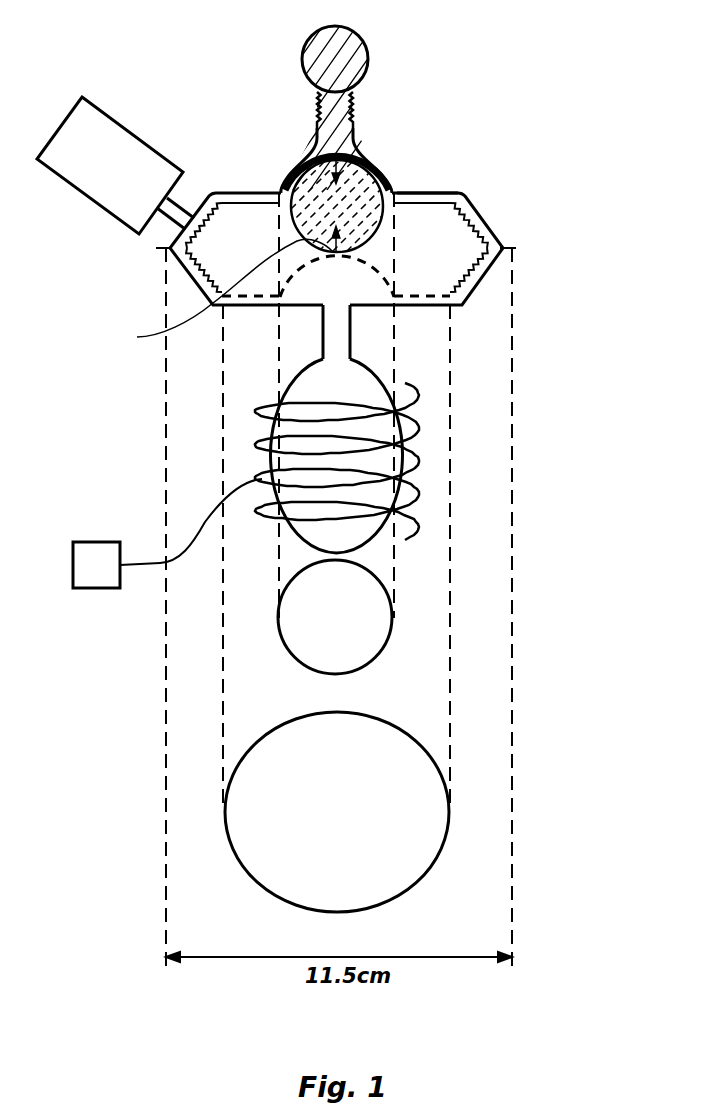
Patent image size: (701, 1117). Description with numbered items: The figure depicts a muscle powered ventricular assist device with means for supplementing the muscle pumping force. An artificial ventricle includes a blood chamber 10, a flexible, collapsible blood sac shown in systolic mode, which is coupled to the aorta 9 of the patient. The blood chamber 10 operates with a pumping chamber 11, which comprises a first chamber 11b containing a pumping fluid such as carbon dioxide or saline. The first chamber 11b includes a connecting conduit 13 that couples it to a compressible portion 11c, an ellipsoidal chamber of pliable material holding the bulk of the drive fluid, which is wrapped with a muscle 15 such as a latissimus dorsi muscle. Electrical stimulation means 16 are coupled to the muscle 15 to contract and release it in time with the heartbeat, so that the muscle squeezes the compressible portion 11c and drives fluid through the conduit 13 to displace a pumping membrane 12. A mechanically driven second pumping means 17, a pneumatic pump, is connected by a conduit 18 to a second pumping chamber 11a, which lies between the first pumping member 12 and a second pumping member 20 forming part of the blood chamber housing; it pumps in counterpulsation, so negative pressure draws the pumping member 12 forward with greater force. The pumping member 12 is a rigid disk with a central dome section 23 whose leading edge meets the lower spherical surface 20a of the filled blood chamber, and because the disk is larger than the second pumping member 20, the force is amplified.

The aorta 9 is at (368, 53).
The blood chamber 10 is at (383, 163).
The pumping chamber 11 is at (500, 227).
The second pumping chamber 11a is at (466, 201).
The first chamber 11b is at (478, 273).
The compressible portion 11c is at (404, 473).
The pumping membrane 12 is at (432, 300).
The connecting conduit 13 is at (340, 338).
The muscle 15 is at (417, 428).
The electrical stimulation means 16 is at (103, 589).
The second pumping means 17 is at (120, 179).
The conduit 18 is at (200, 197).
The second pumping member 20 is at (293, 233).
The lower spherical surface 20a is at (215, 289).
The central dome section 23 is at (311, 258).